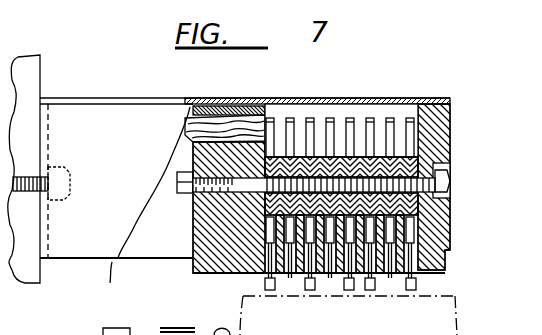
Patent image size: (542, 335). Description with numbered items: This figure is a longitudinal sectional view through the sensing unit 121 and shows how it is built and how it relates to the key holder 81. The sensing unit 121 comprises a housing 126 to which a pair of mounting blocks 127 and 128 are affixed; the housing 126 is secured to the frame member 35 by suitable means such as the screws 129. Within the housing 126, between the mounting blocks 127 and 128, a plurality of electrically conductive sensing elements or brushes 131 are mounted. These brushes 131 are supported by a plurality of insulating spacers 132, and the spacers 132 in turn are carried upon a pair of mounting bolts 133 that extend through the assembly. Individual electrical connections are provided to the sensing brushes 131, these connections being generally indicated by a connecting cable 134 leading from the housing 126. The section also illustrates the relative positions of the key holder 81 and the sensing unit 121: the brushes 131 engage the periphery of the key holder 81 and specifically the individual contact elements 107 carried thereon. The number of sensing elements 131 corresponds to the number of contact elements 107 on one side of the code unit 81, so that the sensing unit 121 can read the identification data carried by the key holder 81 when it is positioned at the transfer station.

The frame member 35 is at (42, 75).
The housing 126 is at (245, 97).
The sensing unit 121 is at (309, 88).
The insulating spacers 132 is at (380, 157).
The mounting block 128 is at (425, 100).
The connecting cable 134 is at (187, 132).
The screws 129 is at (58, 182).
The mounting bolts 133 is at (187, 188).
The mounting block 127 is at (193, 235).
The key holder 81 is at (230, 300).
The sensing elements or brushes 131 is at (330, 283).
The contact elements 107 is at (405, 283).